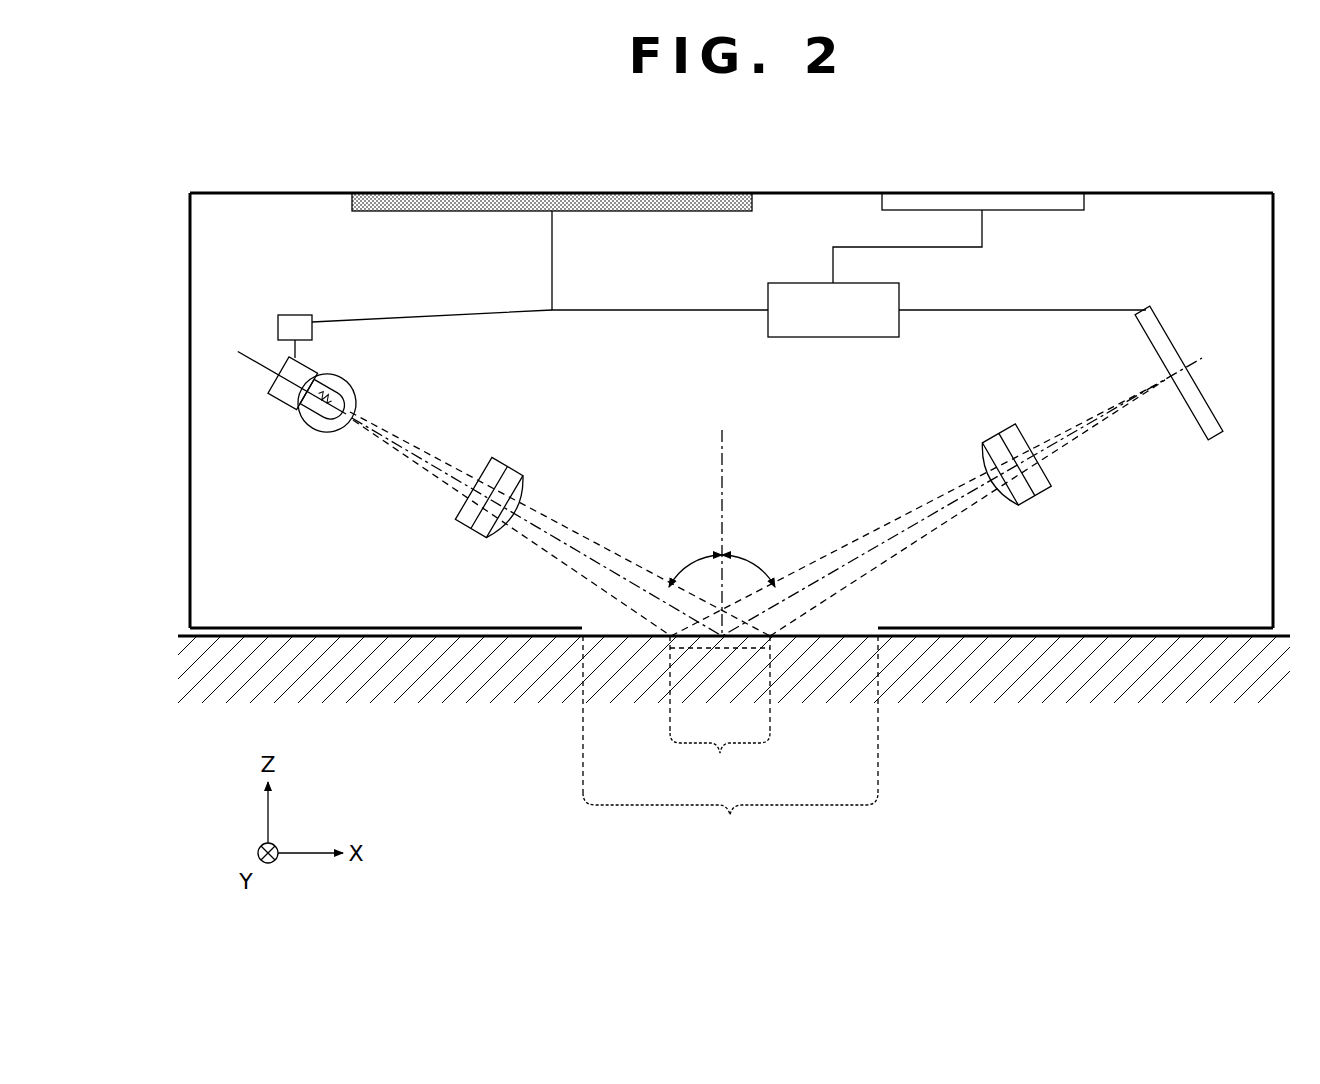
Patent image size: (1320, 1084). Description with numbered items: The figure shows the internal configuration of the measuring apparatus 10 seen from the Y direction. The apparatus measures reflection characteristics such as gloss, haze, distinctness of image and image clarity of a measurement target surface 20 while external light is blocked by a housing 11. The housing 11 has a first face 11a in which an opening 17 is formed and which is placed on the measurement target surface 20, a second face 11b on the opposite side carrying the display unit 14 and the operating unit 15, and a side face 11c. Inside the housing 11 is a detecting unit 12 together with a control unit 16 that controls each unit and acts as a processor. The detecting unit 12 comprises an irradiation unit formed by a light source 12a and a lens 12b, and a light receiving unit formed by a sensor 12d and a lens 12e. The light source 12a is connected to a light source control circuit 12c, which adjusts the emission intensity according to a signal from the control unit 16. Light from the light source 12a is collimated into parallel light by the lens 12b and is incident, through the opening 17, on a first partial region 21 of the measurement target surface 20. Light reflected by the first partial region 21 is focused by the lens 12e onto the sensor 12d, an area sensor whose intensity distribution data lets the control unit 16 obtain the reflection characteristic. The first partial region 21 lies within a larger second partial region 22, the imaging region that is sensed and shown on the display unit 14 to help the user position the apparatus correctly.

The measuring apparatus 10 is at (677, 356).
The housing 11 is at (667, 382).
The first face 11a is at (272, 627).
The second face 11b is at (285, 192).
The side face 11c is at (189, 333).
The detecting unit 12 is at (738, 446).
The light source 12a is at (312, 428).
The lens 12b is at (476, 537).
The light source control circuit 12c is at (290, 315).
The sensor 12d is at (1212, 442).
The lens 12e is at (1036, 494).
The display unit 14 is at (372, 212).
The operating unit 15 is at (1085, 206).
The control unit 16 is at (900, 326).
The opening 17 is at (856, 618).
The measurement target surface 20 is at (1140, 640).
The first partial region 21 is at (720, 712).
The second partial region 22 is at (730, 744).